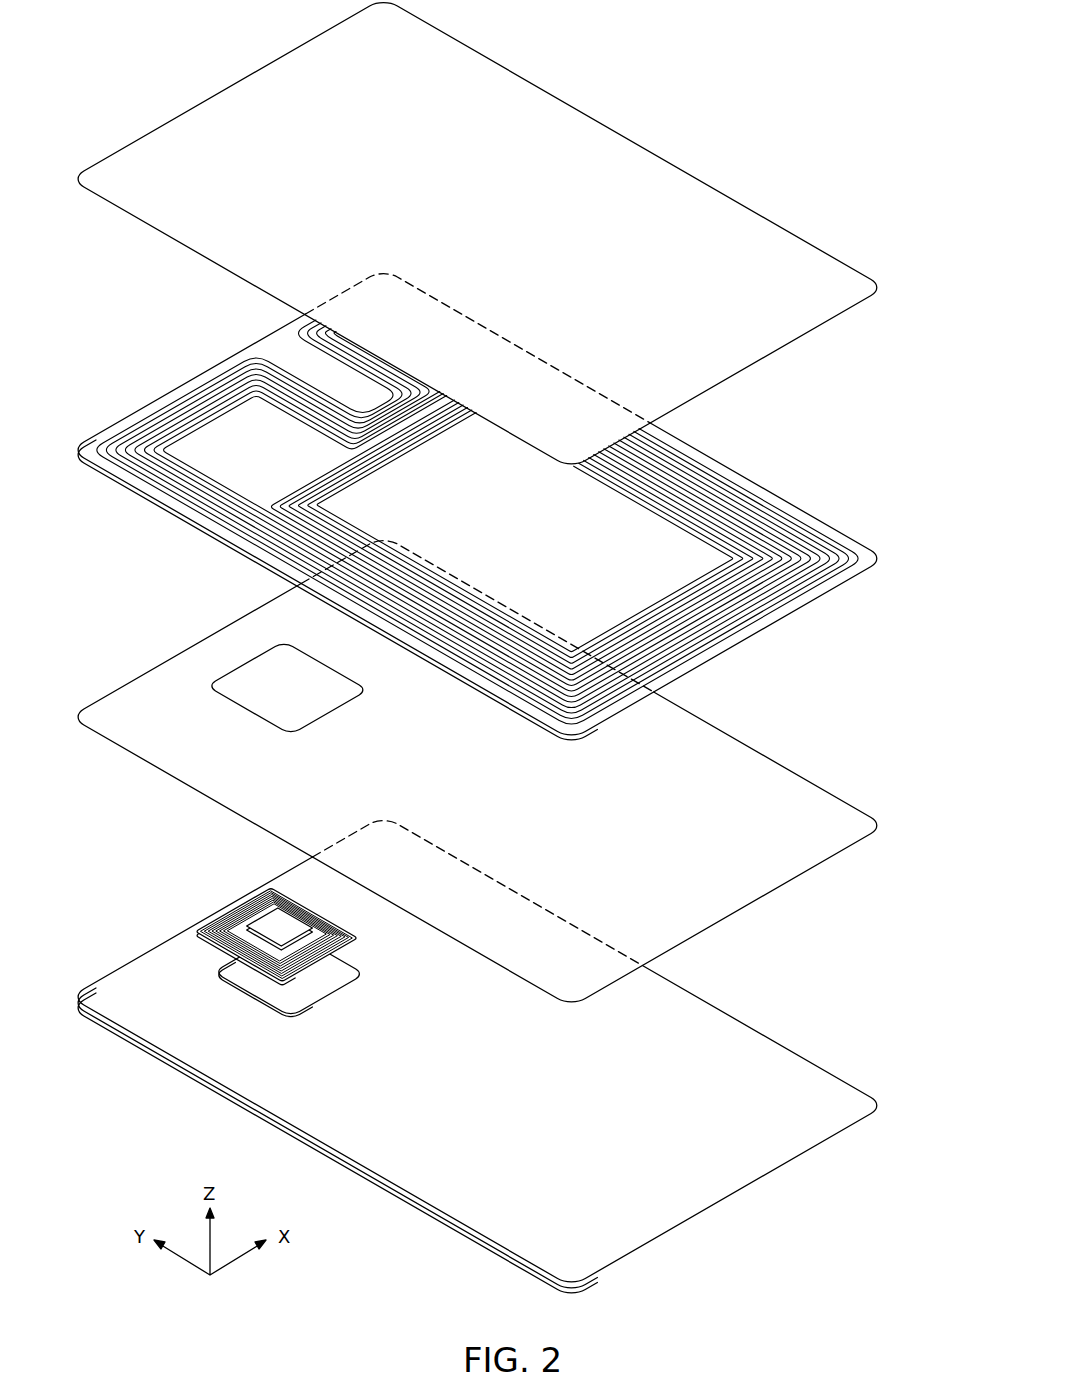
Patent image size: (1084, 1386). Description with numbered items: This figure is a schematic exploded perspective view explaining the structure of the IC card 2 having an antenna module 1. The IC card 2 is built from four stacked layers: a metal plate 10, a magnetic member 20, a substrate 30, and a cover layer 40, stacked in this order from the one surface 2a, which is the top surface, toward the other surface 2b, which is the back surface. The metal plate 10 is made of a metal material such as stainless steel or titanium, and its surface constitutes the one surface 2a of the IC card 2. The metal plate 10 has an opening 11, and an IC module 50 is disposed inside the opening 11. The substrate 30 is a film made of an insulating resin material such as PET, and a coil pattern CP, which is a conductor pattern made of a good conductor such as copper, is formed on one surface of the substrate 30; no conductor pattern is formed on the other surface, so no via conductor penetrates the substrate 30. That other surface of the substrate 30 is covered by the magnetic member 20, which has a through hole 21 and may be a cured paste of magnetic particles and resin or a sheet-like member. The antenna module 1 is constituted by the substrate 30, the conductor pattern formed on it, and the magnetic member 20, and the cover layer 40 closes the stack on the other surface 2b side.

The IC card 2 is at (777, 49).
The one surface 2a is at (732, 1168).
The other surface 2b is at (738, 204).
The cover layer 40 is at (489, 234).
The substrate 30 is at (489, 507).
The coil pattern CP is at (673, 531).
The antenna module 1 is at (503, 638).
The through hole 21 is at (248, 661).
The magnetic member 20 is at (489, 771).
The IC module 50 is at (245, 904).
The opening 11 is at (310, 990).
The metal plate 10 is at (489, 1057).